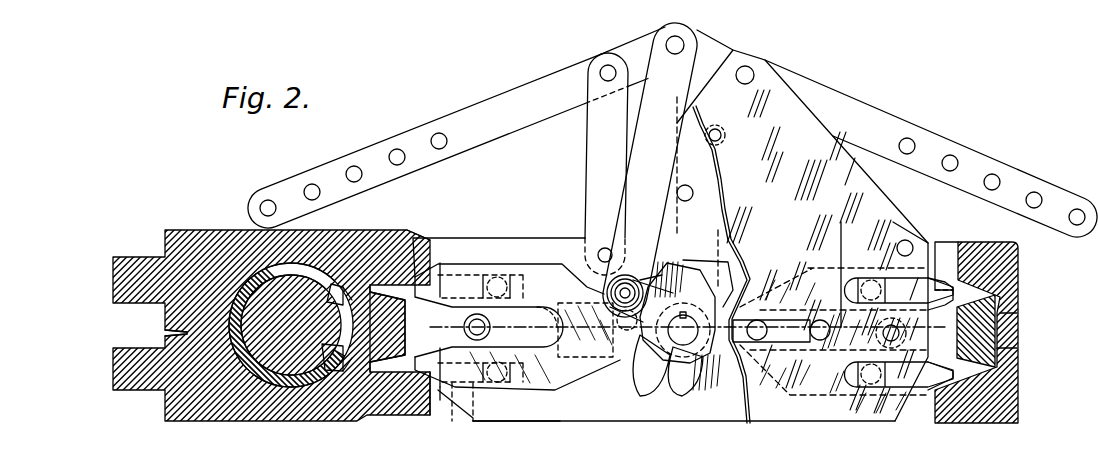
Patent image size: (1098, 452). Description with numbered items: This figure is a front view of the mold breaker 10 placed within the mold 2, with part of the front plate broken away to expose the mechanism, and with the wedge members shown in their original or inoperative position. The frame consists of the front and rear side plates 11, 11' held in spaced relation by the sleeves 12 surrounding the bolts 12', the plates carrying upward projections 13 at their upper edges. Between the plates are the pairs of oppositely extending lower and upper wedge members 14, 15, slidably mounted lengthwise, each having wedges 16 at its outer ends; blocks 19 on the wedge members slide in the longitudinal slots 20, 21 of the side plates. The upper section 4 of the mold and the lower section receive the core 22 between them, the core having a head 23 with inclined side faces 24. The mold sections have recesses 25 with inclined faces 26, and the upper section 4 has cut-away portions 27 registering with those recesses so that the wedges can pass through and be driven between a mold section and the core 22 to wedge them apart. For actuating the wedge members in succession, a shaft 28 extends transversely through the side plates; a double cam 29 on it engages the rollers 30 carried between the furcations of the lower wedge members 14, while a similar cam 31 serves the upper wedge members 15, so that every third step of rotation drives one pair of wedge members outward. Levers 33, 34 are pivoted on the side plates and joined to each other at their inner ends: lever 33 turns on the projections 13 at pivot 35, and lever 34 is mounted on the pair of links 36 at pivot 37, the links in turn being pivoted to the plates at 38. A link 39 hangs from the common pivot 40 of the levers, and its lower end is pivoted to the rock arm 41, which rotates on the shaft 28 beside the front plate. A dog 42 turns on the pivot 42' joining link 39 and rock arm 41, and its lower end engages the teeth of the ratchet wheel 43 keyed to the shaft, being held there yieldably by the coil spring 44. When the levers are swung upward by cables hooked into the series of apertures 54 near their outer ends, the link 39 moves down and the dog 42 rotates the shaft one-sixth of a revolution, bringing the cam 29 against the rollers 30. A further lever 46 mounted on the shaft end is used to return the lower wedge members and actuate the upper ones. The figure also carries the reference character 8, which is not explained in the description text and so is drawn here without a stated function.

The mold 2 is at (113, 330).
The upper section 4 is at (178, 252).
The rod 8 is at (462, 327).
The mold breaker 10 is at (541, 233).
The front side plate 11 is at (823, 336).
The rear side plate 11' is at (516, 430).
The sleeves 12 is at (489, 332).
The bolts 12' is at (522, 318).
The projections 13 is at (800, 82).
The lower wedge members 14 is at (540, 385).
The upper wedge members 15 is at (513, 270).
The wedges 16 is at (432, 385).
The blocks 19 is at (582, 370).
The longitudinal slot 20 is at (442, 402).
The longitudinal slot 21 is at (575, 372).
The core 22 is at (293, 360).
The head 23 is at (400, 305).
The inclined side faces 24 is at (392, 368).
The recesses 25 is at (405, 368).
The inclined faces 26 is at (403, 292).
The cut-away portions 27 is at (417, 238).
The shaft 28 is at (687, 337).
The double cam 29 is at (728, 395).
The rollers 30 is at (643, 363).
The cam 31 is at (703, 272).
The lever 33 is at (893, 133).
The lever 34 is at (464, 120).
The pivot 35 is at (752, 75).
The links 36 is at (595, 155).
The pivot 37 is at (597, 66).
The pivot 38 is at (598, 250).
The link 39 is at (653, 202).
The common pivot 40 is at (681, 44).
The rock arm 41 is at (638, 287).
The dog 42 is at (621, 348).
The pivot 42' is at (594, 293).
The ratchet wheel 43 is at (663, 355).
The coil spring 44 is at (615, 285).
The lever 46 is at (700, 232).
The series of apertures 54 is at (352, 176).